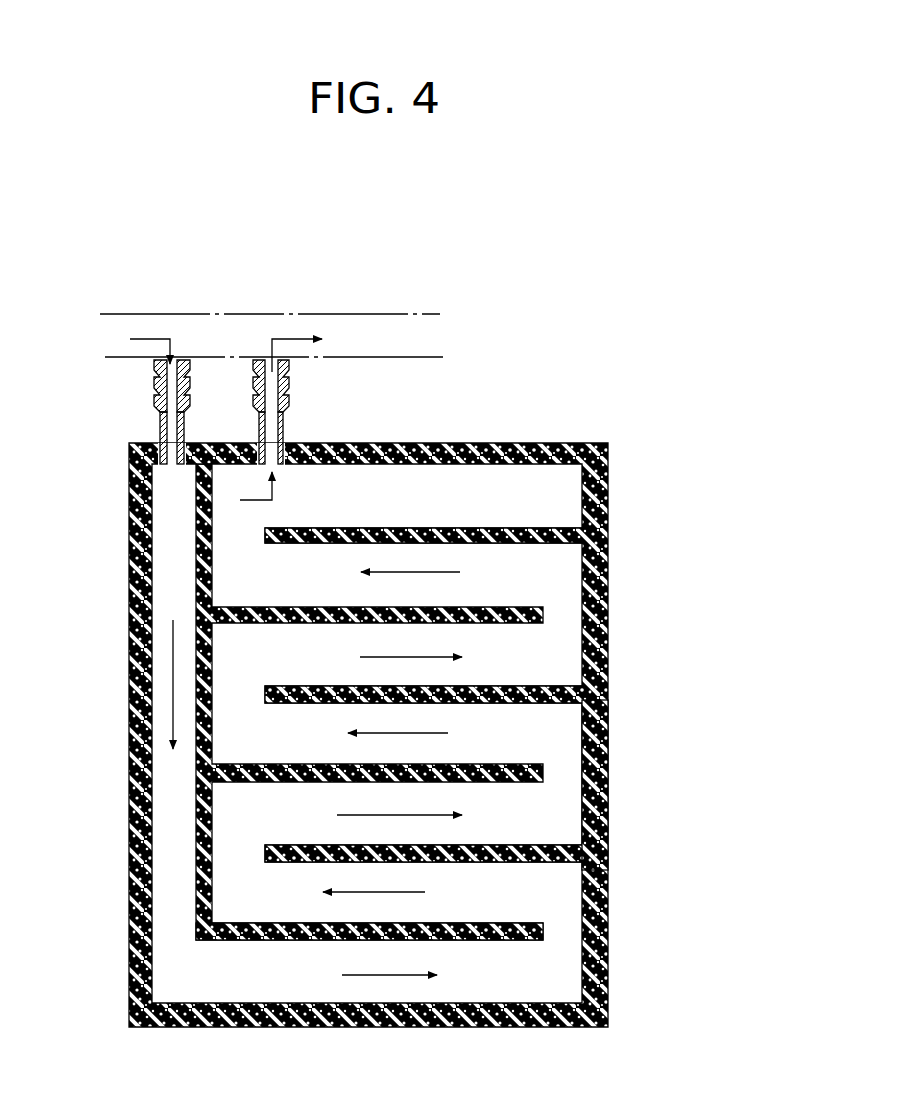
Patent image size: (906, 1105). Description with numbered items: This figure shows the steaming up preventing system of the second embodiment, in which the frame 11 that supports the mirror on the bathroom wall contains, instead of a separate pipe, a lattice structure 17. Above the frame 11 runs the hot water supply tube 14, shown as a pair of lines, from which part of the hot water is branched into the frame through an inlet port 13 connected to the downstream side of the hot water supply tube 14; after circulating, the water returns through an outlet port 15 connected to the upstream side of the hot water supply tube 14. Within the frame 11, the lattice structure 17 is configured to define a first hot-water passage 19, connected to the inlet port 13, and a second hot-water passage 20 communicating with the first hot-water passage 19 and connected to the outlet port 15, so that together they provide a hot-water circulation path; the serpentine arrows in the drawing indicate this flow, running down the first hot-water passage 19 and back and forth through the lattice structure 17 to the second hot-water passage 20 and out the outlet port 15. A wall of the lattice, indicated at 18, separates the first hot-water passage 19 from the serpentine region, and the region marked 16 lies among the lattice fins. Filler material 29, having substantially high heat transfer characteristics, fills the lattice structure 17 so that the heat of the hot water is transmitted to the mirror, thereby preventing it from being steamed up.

The frame 11 is at (635, 470).
The inlet port 13 is at (153, 397).
The hot water supply tube 14 is at (382, 323).
The outlet port 15 is at (285, 412).
The baffle fins 16 is at (563, 648).
The lattice structure 17 is at (497, 940).
The partition wall 18 is at (200, 862).
The first hot-water passage 19 is at (172, 633).
The second hot-water passage 20 is at (317, 985).
The filler material 29 is at (607, 787).